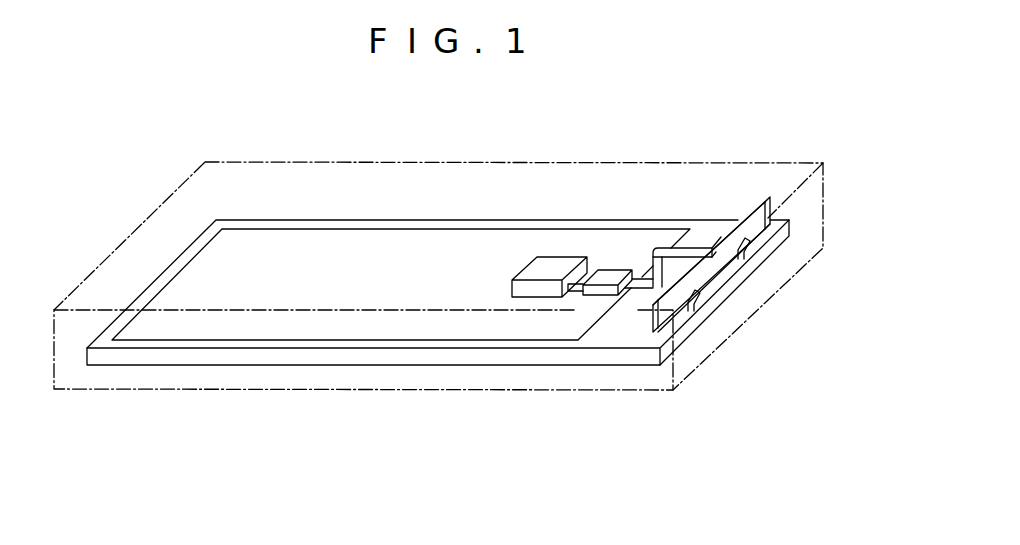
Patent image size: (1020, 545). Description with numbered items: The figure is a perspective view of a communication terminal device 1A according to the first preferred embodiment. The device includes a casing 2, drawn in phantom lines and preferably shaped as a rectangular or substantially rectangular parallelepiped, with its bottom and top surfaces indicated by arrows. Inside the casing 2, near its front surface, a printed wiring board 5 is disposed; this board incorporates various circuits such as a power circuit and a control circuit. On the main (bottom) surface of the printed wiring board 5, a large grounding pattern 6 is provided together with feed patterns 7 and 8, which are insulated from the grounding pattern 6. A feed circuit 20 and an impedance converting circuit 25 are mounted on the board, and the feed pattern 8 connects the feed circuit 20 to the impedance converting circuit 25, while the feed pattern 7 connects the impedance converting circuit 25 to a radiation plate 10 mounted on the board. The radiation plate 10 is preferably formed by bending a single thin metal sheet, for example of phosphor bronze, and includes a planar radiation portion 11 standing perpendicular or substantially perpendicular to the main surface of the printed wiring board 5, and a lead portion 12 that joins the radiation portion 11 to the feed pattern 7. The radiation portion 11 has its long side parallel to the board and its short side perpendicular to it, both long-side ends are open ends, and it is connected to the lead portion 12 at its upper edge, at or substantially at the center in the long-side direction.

The communication terminal device 1A is at (558, 123).
The casing 2 is at (416, 161).
The printed wiring board 5 is at (474, 366).
The grounding pattern 6 is at (473, 243).
The feed pattern 7 is at (640, 292).
The feed pattern 8 is at (573, 291).
The radiation plate 10 is at (747, 200).
The radiation portion 11 is at (717, 274).
The lead portion 12 is at (698, 247).
The feed circuit 20 is at (558, 259).
The impedance converting circuit 25 is at (613, 268).